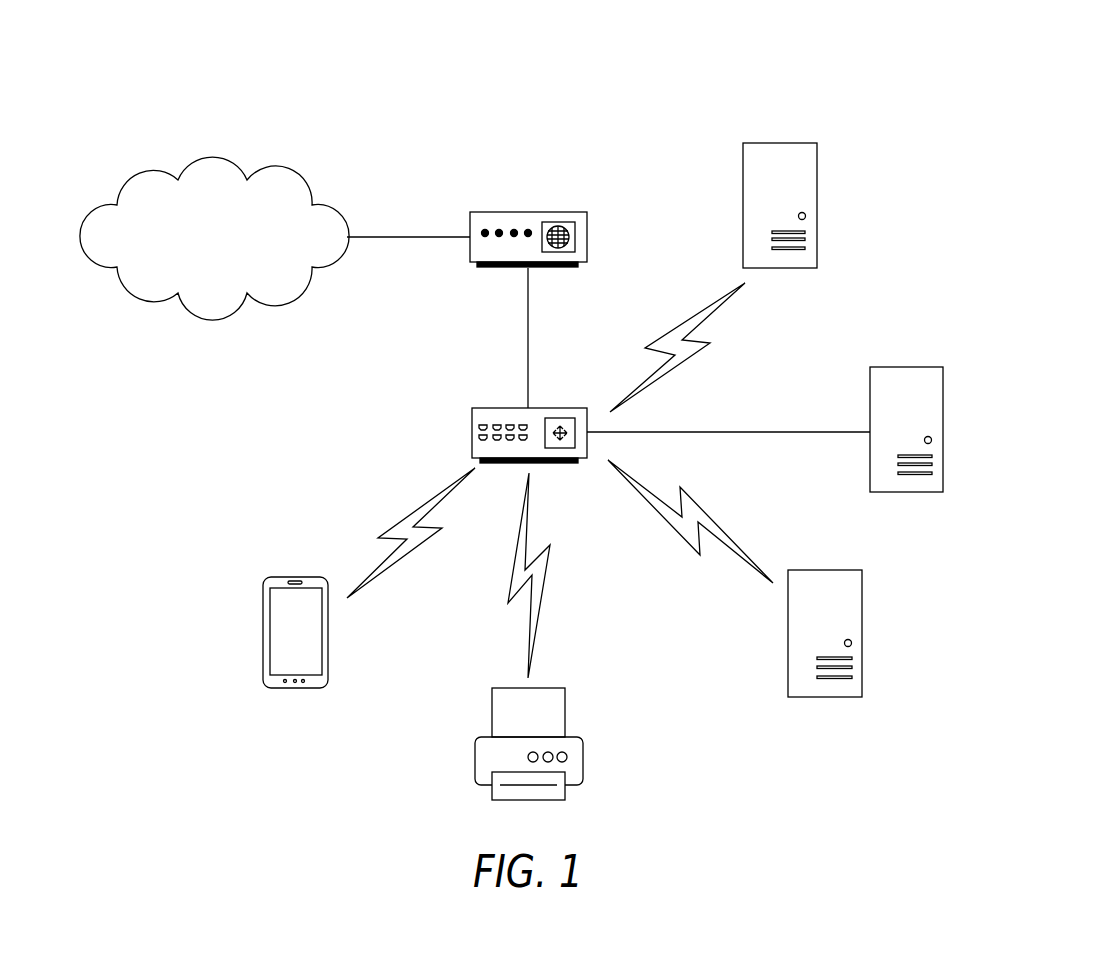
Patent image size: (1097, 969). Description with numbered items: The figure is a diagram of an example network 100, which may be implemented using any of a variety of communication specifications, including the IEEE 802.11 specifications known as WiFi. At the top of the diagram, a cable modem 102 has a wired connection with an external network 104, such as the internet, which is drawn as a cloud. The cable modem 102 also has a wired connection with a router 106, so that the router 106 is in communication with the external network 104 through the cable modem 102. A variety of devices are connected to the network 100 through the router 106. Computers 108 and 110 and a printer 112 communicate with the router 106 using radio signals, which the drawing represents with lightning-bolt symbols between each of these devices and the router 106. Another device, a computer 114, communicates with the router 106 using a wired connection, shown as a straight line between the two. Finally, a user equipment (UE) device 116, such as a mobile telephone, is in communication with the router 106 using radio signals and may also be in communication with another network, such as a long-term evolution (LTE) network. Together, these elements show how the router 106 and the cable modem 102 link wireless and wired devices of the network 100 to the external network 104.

The network 100 is at (963, 70).
The cable modem 102 is at (530, 212).
The external network 104 is at (213, 157).
The router 106 is at (508, 408).
The computer 108 is at (780, 143).
The computer 110 is at (827, 570).
The printer 112 is at (510, 688).
The computer 114 is at (905, 367).
The user equipment (UE) device 116 is at (298, 577).